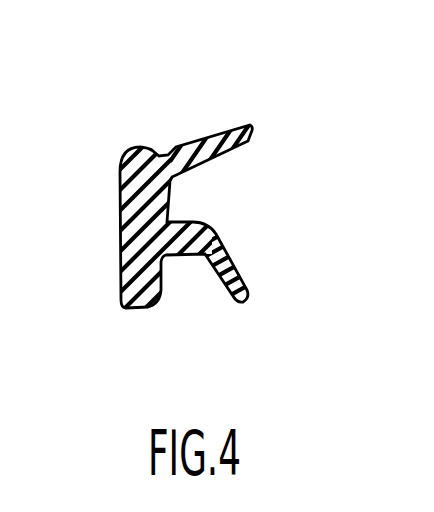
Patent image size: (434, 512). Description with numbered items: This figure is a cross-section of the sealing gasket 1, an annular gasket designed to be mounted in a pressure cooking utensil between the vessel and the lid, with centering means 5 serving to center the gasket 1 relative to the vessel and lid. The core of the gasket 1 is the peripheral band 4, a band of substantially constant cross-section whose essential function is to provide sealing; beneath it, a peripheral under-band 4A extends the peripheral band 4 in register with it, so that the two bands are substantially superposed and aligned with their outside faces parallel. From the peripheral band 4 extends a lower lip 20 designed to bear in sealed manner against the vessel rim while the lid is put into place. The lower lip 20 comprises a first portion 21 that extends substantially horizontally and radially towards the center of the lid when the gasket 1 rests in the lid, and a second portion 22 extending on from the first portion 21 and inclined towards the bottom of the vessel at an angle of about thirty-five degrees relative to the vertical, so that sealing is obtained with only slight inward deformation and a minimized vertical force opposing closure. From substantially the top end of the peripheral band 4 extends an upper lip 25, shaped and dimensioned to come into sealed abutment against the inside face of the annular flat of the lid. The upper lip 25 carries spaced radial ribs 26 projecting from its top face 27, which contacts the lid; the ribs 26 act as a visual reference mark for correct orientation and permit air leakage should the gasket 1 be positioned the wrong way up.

The sealing gasket 1 is at (107, 141).
The peripheral band 4 is at (139, 231).
The peripheral under-band 4A is at (167, 262).
The centering means 5 is at (124, 307).
The lower lip 20 is at (213, 283).
The first portion 21 is at (192, 222).
The second portion 22 is at (238, 277).
The upper lip 25 is at (249, 139).
The ribs 26 is at (205, 138).
The top face 27 is at (158, 155).